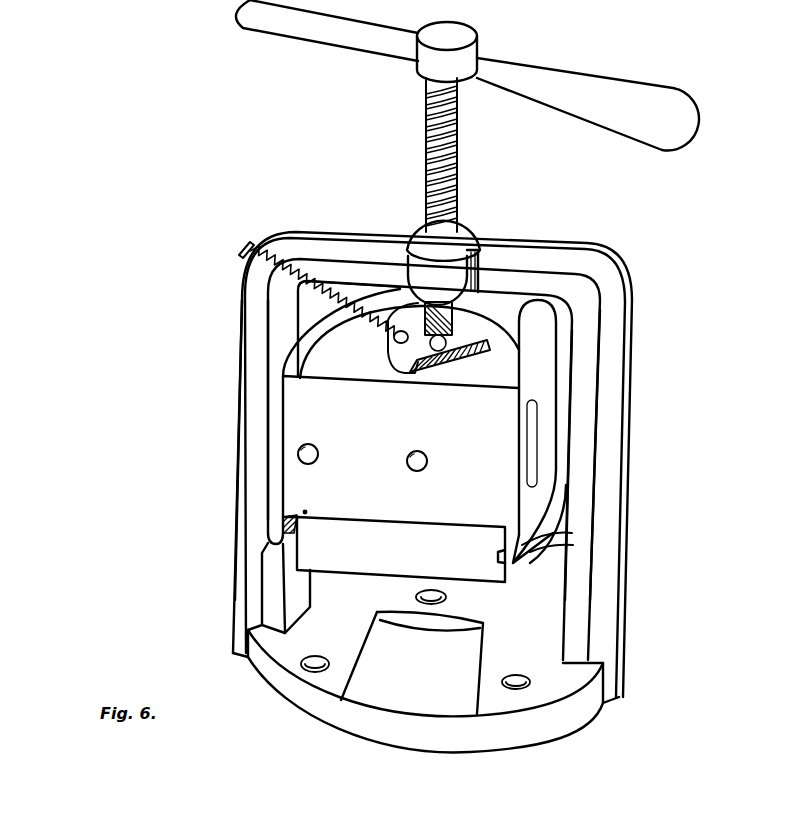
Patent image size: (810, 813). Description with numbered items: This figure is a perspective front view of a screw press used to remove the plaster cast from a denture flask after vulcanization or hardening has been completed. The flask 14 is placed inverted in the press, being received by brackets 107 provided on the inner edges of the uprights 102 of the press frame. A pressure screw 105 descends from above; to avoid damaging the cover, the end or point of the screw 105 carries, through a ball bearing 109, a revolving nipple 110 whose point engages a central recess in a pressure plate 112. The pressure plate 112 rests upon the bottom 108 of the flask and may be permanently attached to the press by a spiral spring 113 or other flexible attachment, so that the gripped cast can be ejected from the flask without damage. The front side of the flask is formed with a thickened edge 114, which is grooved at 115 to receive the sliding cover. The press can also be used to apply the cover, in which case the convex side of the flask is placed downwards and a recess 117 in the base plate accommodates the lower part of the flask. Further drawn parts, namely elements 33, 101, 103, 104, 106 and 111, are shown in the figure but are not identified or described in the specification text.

The flask 14 is at (298, 350).
The holes 33 is at (322, 455).
The base with mounting holes 101 is at (430, 588).
The uprights 102 is at (252, 514).
The frame top bar 103 is at (582, 265).
The screw collar 104 is at (465, 235).
The pressure screw 105 is at (459, 143).
The handle 106 is at (580, 90).
The brackets 107 is at (552, 545).
The bottom of the flask 108 is at (373, 363).
The ball bearing 109 is at (450, 323).
The revolving nipple 110 is at (412, 330).
The screw shank end 111 is at (443, 350).
The pressure plate 112 is at (470, 350).
The spiral spring 113 is at (320, 285).
The thickened edge 114 is at (283, 542).
The groove 115 is at (286, 521).
The recess 117 is at (412, 663).